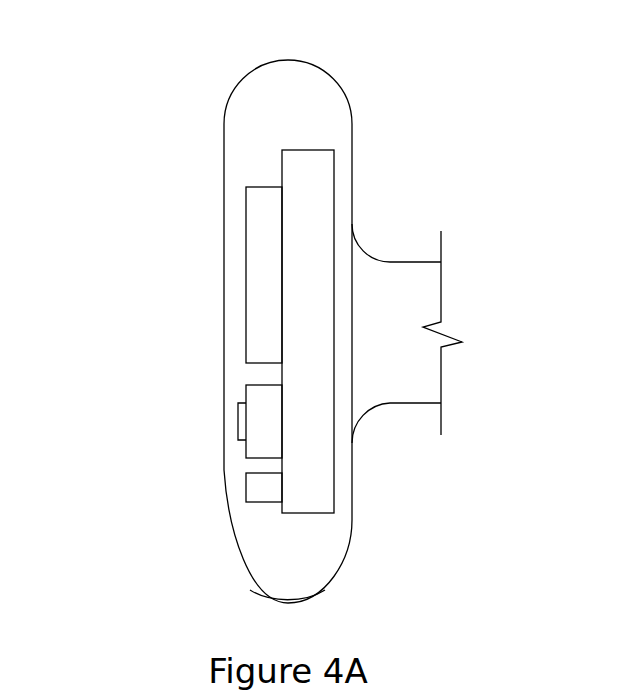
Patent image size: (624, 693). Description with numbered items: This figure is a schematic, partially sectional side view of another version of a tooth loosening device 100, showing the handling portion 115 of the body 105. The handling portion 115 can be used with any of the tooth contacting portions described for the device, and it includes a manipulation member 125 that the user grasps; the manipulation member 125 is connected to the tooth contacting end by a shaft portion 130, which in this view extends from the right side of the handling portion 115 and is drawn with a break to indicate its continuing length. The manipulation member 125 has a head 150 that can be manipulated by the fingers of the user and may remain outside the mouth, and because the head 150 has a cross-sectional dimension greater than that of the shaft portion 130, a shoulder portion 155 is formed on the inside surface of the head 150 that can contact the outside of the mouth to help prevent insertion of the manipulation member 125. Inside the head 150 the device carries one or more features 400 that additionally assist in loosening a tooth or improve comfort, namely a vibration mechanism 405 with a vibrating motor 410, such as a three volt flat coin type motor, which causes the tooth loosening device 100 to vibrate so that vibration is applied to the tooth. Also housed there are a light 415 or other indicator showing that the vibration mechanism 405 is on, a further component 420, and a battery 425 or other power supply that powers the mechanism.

The tooth loosening device 100 is at (420, 65).
The body 105 is at (445, 100).
The handling portion 115 is at (162, 78).
The manipulation member 125 is at (152, 382).
The shaft portion 130 is at (397, 470).
The head 150 is at (256, 568).
The shoulder portion 155 is at (352, 528).
The features 400 is at (125, 208).
The vibration mechanism 405 is at (200, 160).
The vibrating motor 410 is at (246, 275).
The light 415 is at (238, 421).
The component 420 is at (246, 488).
The battery 425 is at (303, 160).